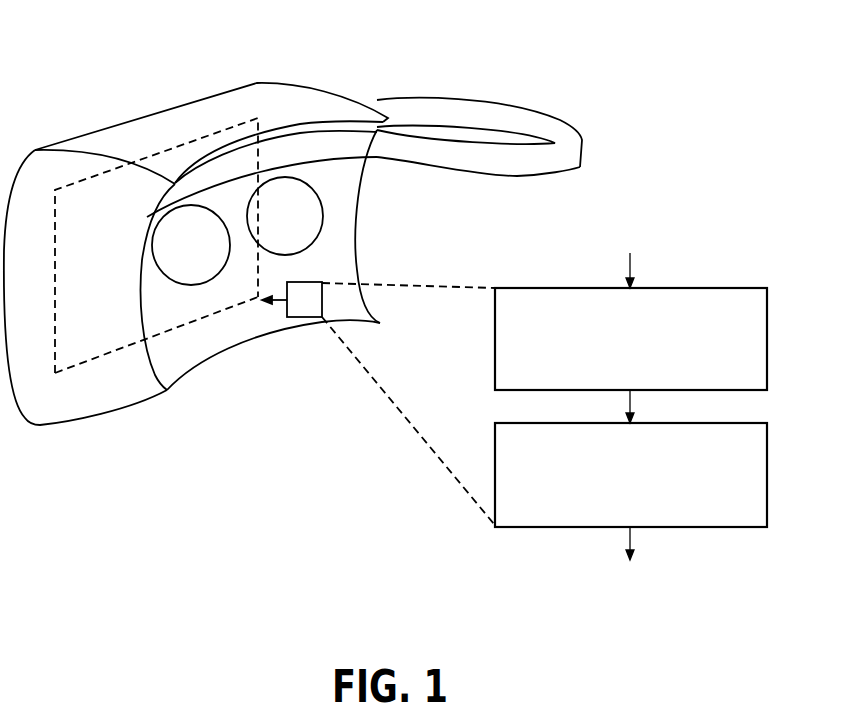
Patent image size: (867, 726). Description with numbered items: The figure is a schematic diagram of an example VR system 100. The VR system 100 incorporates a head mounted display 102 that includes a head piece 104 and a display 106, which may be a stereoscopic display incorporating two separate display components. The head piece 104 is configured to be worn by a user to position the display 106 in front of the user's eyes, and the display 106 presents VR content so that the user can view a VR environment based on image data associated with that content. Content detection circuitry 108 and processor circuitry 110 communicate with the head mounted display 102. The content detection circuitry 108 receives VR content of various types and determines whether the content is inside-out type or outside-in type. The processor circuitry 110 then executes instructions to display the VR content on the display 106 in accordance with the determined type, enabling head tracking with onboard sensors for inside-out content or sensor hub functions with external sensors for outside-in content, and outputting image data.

The VR system 100 is at (412, 308).
The head mounted display 102 is at (87, 455).
The head piece 104 is at (593, 138).
The display 106 is at (123, 349).
The content detection circuitry 108 is at (650, 377).
The processor circuitry 110 is at (650, 512).